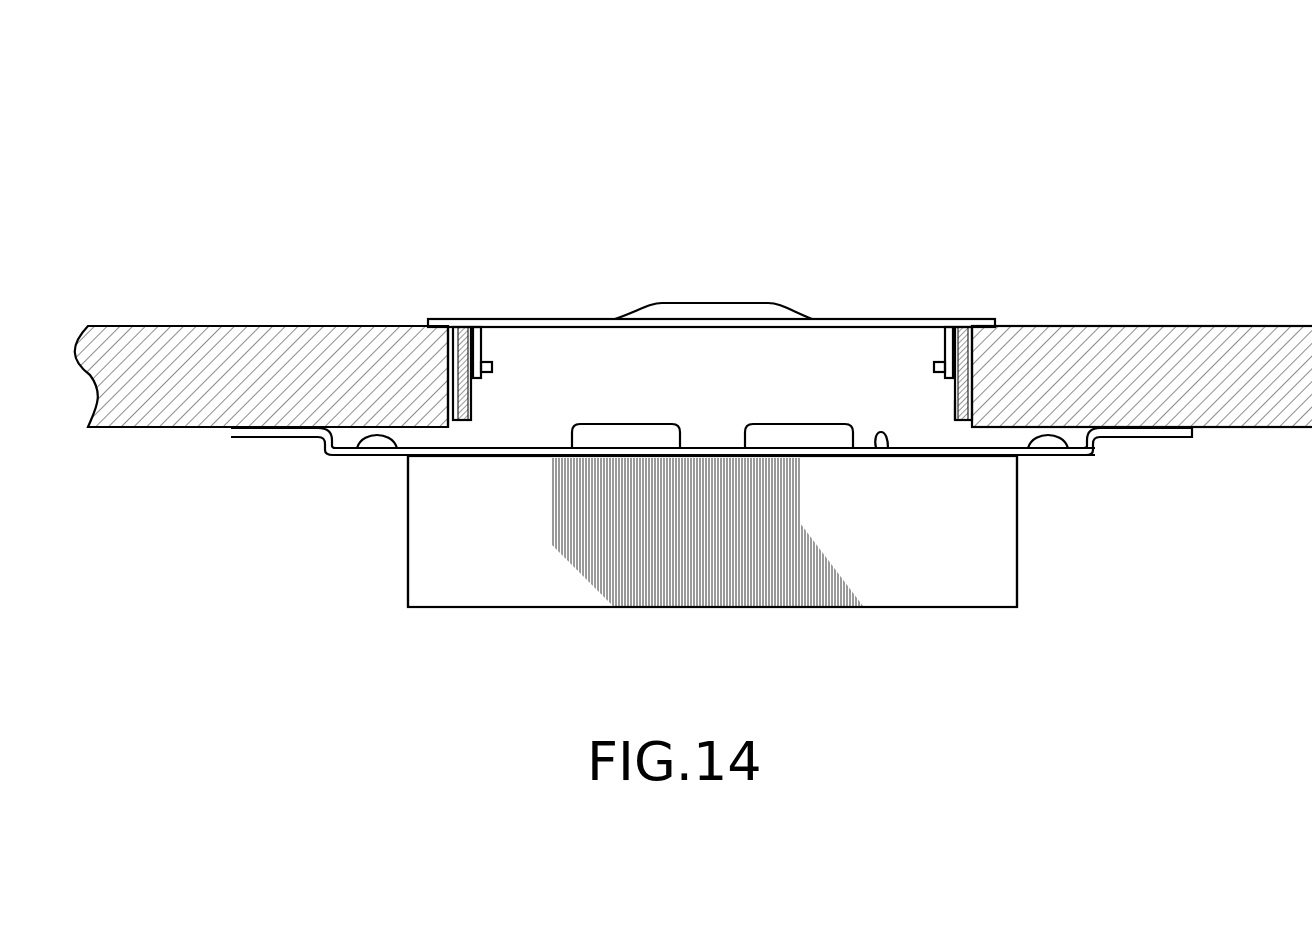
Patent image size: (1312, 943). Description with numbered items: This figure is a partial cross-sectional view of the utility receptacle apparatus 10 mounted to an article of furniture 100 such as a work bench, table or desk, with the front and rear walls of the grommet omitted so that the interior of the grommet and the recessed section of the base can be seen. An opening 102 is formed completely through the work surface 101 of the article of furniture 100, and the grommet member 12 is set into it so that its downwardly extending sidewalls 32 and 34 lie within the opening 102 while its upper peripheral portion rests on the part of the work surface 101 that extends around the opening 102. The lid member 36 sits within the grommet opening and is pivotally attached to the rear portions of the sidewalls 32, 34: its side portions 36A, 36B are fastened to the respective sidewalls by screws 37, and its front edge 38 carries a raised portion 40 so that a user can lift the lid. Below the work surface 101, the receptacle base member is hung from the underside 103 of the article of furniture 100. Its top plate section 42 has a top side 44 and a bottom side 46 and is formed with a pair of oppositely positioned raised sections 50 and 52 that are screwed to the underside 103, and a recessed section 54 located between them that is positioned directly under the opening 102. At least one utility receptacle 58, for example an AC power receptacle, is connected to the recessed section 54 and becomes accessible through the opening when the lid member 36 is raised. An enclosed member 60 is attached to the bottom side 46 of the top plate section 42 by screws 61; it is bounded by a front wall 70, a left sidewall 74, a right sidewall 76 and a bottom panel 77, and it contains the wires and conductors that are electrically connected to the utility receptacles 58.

The utility receptacle apparatus 10 is at (1086, 162).
The grommet member 12 is at (508, 318).
The sidewall 32 is at (958, 404).
The sidewall 34 is at (470, 403).
The lid member 36 is at (570, 326).
The side portion 36A is at (945, 343).
The side portion 36B is at (481, 341).
The screw 37 is at (492, 368).
The front edge 38 is at (845, 325).
The raised portion 40 is at (733, 305).
The top plate section 42 is at (881, 447).
The top side 44 is at (520, 447).
The bottom side 46 is at (371, 455).
The raised section 50 is at (255, 437).
The raised section 52 is at (1180, 437).
The recessed section 54 is at (720, 447).
The utility receptacle 58 is at (640, 447).
The enclosed member 60 is at (478, 583).
The screw 61 is at (337, 453).
The front wall 70 is at (703, 583).
The left sidewall 74 is at (1017, 577).
The right sidewall 76 is at (407, 572).
The bottom panel 77 is at (603, 610).
The article of furniture 100 is at (257, 326).
The work surface 101 is at (348, 326).
The opening 102 is at (463, 432).
The underside 103 is at (120, 428).